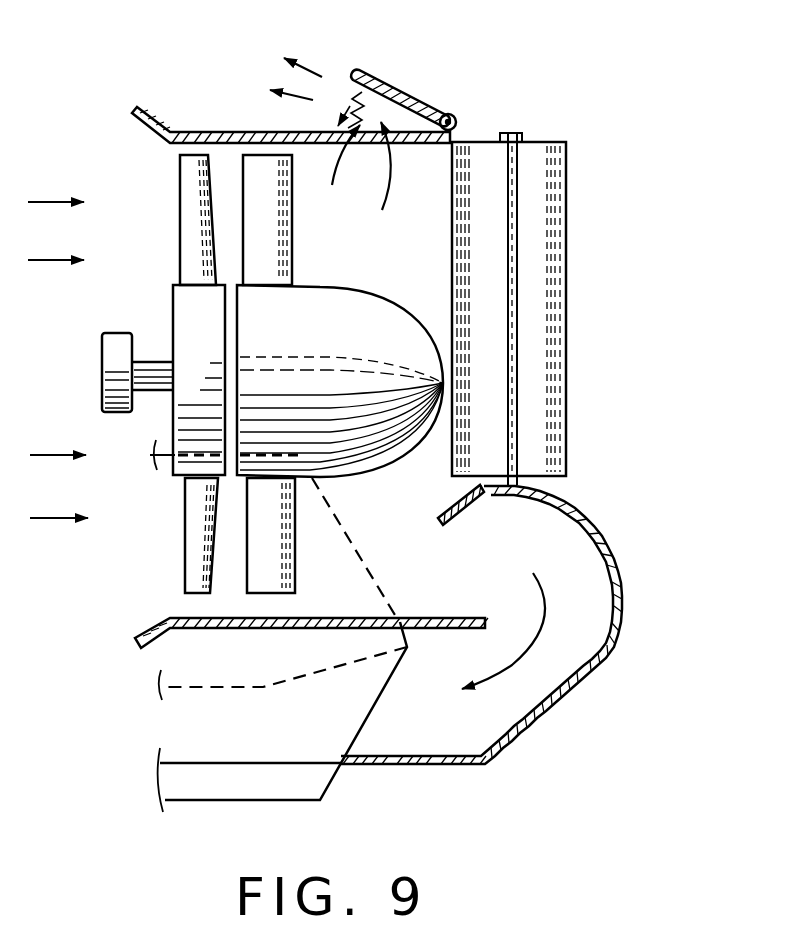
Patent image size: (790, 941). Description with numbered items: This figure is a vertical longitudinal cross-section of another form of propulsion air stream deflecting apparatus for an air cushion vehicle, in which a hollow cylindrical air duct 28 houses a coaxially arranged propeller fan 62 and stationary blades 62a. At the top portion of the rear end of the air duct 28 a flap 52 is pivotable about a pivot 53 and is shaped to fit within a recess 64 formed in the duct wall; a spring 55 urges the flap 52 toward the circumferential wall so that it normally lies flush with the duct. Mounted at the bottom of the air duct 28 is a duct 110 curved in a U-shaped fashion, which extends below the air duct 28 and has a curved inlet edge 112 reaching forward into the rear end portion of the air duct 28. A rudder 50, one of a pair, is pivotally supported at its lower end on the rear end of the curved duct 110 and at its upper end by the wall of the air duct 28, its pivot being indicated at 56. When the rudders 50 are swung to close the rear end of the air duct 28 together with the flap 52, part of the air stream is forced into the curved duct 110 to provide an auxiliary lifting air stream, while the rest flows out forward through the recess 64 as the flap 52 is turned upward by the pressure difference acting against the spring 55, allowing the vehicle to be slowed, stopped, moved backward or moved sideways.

The air duct 28 is at (195, 131).
The rudder 50 is at (551, 243).
The flap 52 is at (412, 102).
The pivot 53 is at (457, 121).
The spring 55 is at (338, 124).
The pivot for the rudder 56 is at (516, 190).
The propeller fan 62 is at (186, 176).
The stationary blades 62a is at (274, 243).
The recess 64 is at (392, 134).
The curved duct 110 is at (614, 665).
The curved inlet edge 112 is at (460, 508).